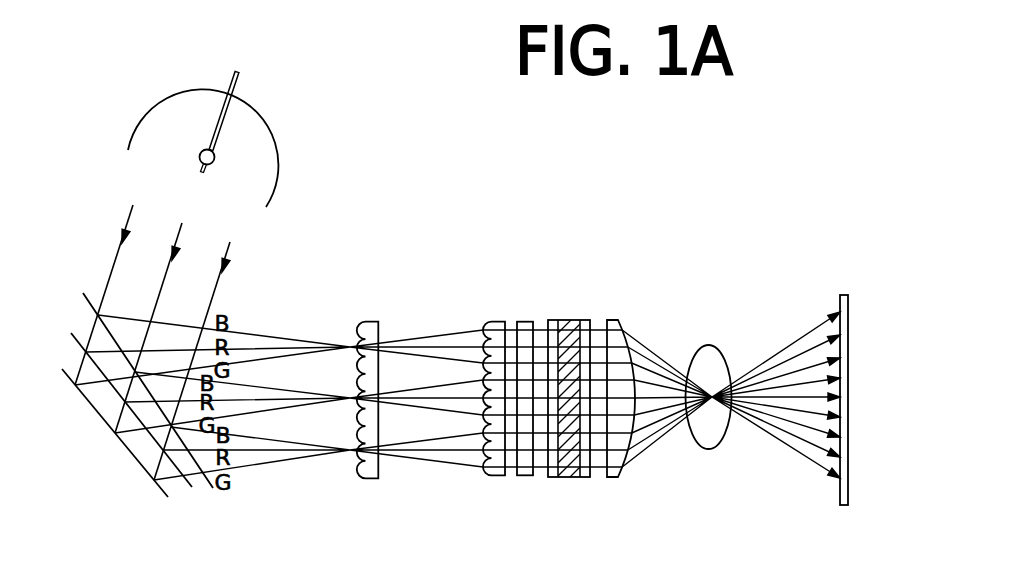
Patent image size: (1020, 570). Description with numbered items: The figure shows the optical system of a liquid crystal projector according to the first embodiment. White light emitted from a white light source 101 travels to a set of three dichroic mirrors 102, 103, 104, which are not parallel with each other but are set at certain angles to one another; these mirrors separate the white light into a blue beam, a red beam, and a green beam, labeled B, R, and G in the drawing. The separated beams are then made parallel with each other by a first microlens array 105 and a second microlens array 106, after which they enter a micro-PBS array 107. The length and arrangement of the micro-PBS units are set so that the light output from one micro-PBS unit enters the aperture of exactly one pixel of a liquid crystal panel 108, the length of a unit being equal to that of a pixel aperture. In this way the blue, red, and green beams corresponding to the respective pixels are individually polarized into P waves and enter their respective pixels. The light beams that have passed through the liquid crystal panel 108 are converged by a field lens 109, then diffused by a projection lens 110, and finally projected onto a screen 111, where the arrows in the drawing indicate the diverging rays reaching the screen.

The white light source 101 is at (265, 128).
The dichroic mirror 102 is at (213, 488).
The dichroic mirror 103 is at (190, 488).
The dichroic mirror 104 is at (131, 455).
The first microlens array 105 is at (373, 478).
The second microlens array 106 is at (488, 477).
The micro-PBS array 107 is at (528, 476).
The liquid crystal panel 108 is at (562, 320).
The field lens 109 is at (618, 326).
The projection lens 110 is at (708, 356).
The screen 111 is at (843, 499).